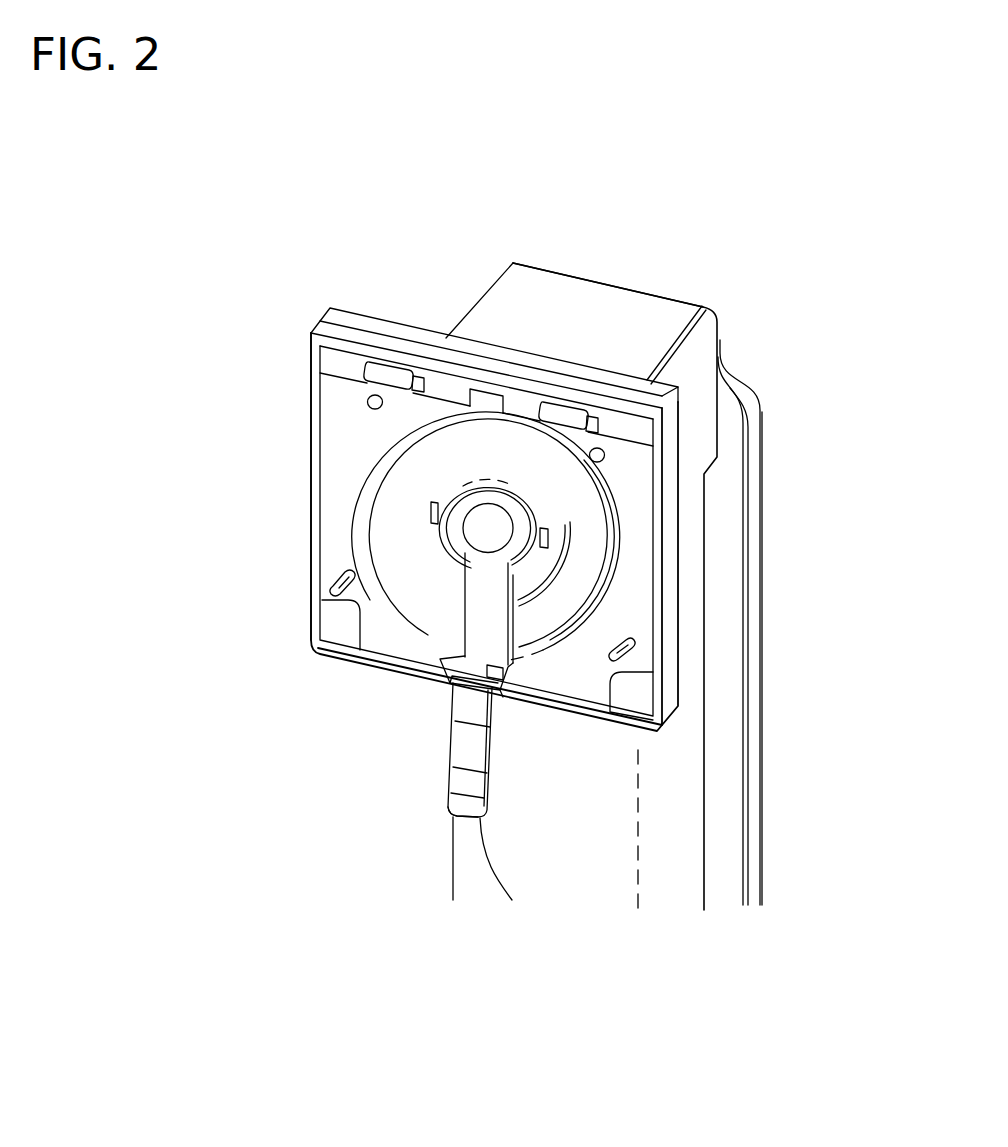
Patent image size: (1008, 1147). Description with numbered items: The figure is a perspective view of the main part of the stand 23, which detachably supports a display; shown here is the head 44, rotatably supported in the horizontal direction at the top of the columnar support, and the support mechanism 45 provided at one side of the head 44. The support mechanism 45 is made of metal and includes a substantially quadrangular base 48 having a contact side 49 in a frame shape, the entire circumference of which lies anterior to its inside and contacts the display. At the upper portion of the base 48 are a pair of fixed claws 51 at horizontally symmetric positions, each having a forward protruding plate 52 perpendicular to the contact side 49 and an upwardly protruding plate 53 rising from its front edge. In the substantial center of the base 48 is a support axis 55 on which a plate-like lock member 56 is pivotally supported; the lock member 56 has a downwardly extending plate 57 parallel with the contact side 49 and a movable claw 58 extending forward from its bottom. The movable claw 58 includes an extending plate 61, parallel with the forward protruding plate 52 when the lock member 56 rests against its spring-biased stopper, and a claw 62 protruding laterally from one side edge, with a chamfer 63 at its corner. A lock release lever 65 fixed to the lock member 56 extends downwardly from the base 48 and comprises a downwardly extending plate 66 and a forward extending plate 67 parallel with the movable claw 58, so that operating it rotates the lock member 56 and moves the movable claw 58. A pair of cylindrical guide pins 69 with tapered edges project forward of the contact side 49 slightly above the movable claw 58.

The stand 23 is at (733, 258).
The head 44 is at (712, 578).
The support mechanism 45 is at (295, 451).
The base 48 is at (354, 336).
The contact side 49 is at (318, 390).
The fixed claws 51 is at (390, 352).
The forward protruding plate 52 is at (419, 378).
The upwardly protruding plate 53 is at (370, 396).
The support axis 55 is at (487, 527).
The lock member 56 is at (463, 585).
The downwardly extending plate 57 is at (450, 599).
The movable claw 58 is at (458, 686).
The extending plate 61 is at (448, 678).
The claw 62 is at (503, 684).
The chamfer 63 is at (503, 700).
The lock release lever 65 is at (436, 818).
The downwardly extending plate 66 is at (460, 745).
The forward extending plate 67 is at (490, 858).
The guide pins 69 is at (332, 578).